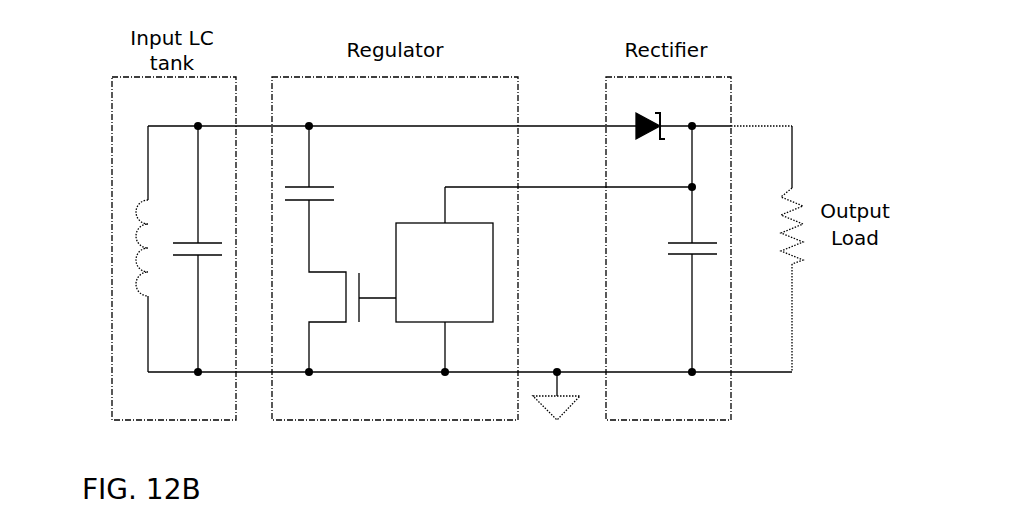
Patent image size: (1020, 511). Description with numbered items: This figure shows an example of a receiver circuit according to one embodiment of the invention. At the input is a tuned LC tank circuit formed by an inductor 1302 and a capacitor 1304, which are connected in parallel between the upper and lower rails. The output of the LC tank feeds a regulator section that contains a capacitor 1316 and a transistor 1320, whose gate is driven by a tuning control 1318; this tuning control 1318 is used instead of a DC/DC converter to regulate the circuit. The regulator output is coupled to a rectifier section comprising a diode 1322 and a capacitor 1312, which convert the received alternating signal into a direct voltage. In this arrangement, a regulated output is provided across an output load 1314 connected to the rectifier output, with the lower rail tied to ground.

The inductor 1302 is at (140, 247).
The capacitor 1304 is at (188, 247).
The rectifier output capacitor 1312 is at (672, 246).
The output load 1314 is at (803, 195).
The regulator capacitor 1316 is at (320, 173).
The tuning control 1318 is at (416, 222).
The transistor 1320 is at (337, 286).
The rectifier diode 1322 is at (634, 113).